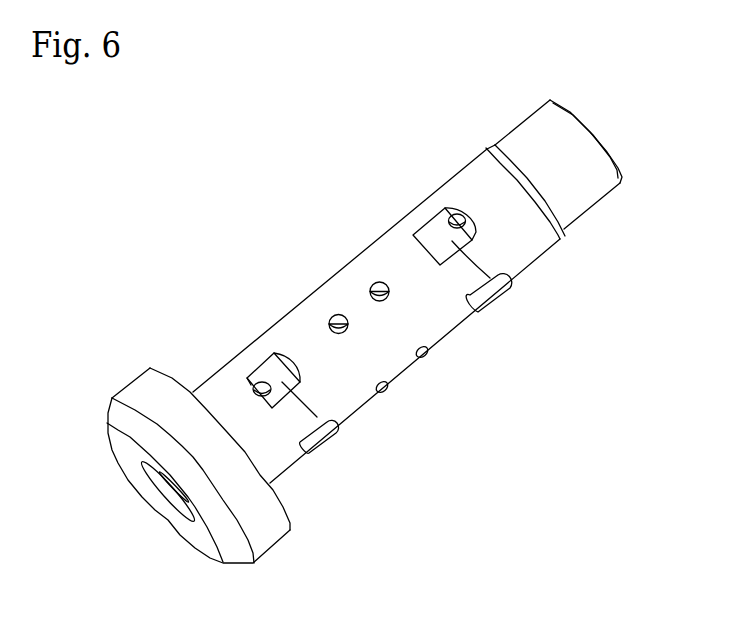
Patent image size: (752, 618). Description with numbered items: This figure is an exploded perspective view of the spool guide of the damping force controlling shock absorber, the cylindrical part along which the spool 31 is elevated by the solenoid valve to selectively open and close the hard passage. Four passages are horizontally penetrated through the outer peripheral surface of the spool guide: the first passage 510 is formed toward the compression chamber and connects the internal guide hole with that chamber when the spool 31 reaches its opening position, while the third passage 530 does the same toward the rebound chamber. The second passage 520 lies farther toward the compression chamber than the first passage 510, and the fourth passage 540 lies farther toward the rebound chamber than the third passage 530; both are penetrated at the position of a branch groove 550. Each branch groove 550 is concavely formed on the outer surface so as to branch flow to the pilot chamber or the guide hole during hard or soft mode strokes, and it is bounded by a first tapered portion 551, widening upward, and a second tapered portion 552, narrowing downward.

The spool 31 is at (614, 121).
The first passage 510 is at (381, 300).
The second passage 520 is at (473, 228).
The third passage 530 is at (340, 333).
The fourth passage 540 is at (262, 385).
The branch groove 550 is at (333, 428).
The first tapered portion 551 is at (247, 380).
The second tapered portion 552 is at (273, 353).